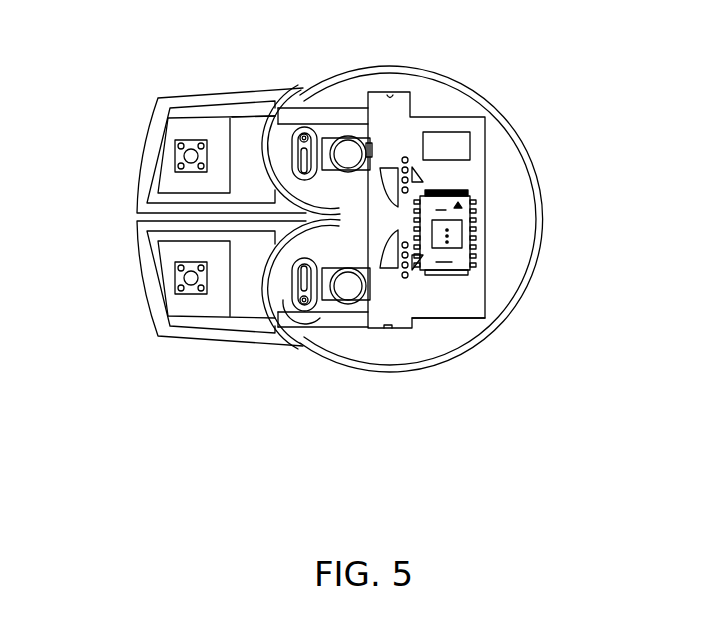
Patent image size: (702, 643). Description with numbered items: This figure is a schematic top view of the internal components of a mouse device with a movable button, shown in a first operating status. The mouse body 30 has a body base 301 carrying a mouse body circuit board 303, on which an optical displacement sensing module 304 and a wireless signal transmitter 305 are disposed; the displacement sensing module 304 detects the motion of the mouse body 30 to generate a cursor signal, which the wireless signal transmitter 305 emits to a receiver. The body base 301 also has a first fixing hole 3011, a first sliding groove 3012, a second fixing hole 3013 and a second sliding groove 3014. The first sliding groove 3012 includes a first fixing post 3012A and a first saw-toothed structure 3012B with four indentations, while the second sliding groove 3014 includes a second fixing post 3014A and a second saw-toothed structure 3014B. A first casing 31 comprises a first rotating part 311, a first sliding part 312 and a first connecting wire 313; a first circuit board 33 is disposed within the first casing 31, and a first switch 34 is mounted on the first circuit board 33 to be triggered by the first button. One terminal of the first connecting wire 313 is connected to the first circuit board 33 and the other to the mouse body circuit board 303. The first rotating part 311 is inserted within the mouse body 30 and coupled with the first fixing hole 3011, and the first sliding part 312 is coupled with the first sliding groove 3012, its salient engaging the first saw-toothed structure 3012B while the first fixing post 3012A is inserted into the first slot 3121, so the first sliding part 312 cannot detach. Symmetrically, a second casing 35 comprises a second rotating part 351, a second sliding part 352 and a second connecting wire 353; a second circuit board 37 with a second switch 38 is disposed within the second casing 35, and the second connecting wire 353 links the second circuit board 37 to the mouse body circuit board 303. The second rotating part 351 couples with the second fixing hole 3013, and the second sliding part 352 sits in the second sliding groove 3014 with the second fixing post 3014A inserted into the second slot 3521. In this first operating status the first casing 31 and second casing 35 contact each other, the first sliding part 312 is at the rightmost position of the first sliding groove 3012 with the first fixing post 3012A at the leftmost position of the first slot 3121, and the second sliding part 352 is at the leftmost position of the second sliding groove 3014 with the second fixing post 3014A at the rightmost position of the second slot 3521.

The mouse body 30 is at (493, 84).
The body base 301 is at (507, 240).
The mouse body circuit board 303 is at (473, 288).
The optical displacement sensing module 304 is at (463, 210).
The wireless signal transmitter 305 is at (458, 145).
The first fixing hole 3011 is at (440, 318).
The first sliding groove 3012 is at (338, 322).
The first fixing post 3012A is at (305, 303).
The first saw-toothed structure 3012B is at (275, 312).
The second fixing hole 3013 is at (372, 143).
The second sliding groove 3014 is at (349, 145).
The second fixing post 3014A is at (301, 125).
The second saw-toothed structure 3014B is at (284, 128).
The first rotating part 311 is at (395, 300).
The first sliding part 312 is at (296, 285).
The first slot 3121 is at (287, 287).
The first connecting wire 313 is at (353, 323).
The first casing 31 is at (138, 244).
The first circuit board 33 is at (185, 307).
The first switch 34 is at (187, 278).
The second casing 35 is at (153, 117).
The second circuit board 37 is at (167, 182).
The second switch 38 is at (188, 155).
The second rotating part 351 is at (350, 128).
The second sliding part 352 is at (284, 151).
The second slot 3521 is at (301, 134).
The second connecting wire 353 is at (237, 123).